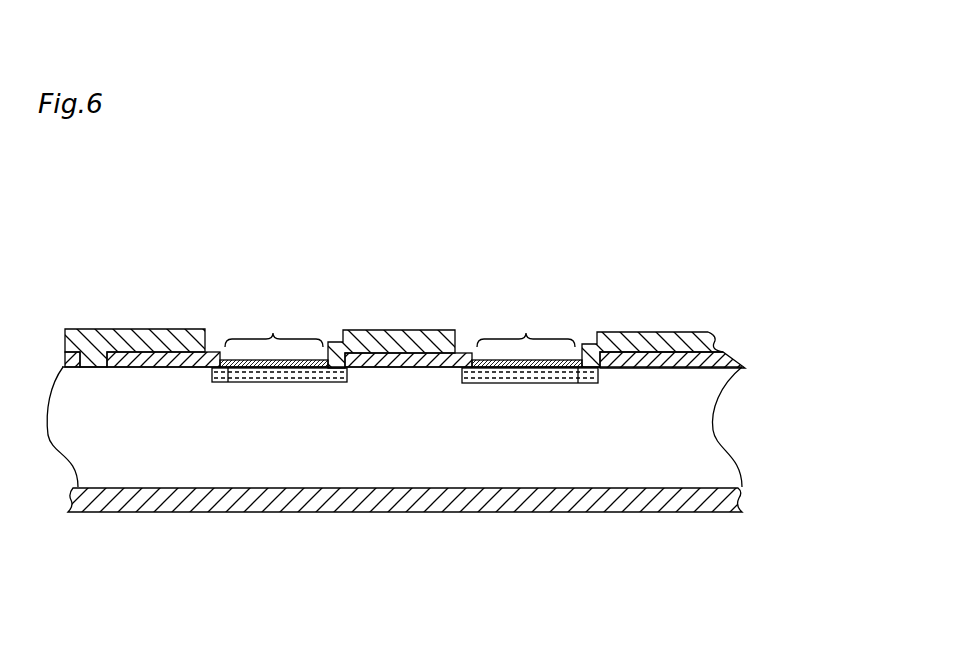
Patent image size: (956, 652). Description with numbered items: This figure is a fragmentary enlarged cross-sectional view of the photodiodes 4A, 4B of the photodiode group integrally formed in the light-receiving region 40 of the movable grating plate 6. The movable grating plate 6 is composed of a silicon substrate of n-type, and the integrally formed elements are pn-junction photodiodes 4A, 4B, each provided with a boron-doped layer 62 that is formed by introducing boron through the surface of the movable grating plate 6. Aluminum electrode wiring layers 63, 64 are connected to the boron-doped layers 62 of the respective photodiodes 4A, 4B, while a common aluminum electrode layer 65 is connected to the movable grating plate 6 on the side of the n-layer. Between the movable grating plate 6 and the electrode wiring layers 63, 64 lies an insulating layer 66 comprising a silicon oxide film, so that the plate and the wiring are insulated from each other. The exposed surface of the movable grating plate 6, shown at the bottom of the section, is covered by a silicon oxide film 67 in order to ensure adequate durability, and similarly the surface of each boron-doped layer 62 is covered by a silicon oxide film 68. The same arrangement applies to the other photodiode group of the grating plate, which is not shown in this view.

The light-receiving region 40 is at (510, 273).
The movable grating plate 6 is at (740, 432).
The photodiode 4A is at (274, 321).
The photodiode 4B is at (526, 322).
The boron-doped layer 62 is at (272, 384).
The aluminum electrode wiring layer 63 is at (416, 337).
The aluminum electrode wiring layer 64 is at (673, 337).
The common aluminum electrode layer 65 is at (121, 337).
The insulating layer 66 is at (378, 355).
The silicon oxide film 67 is at (692, 507).
The silicon oxide film 68 is at (228, 384).